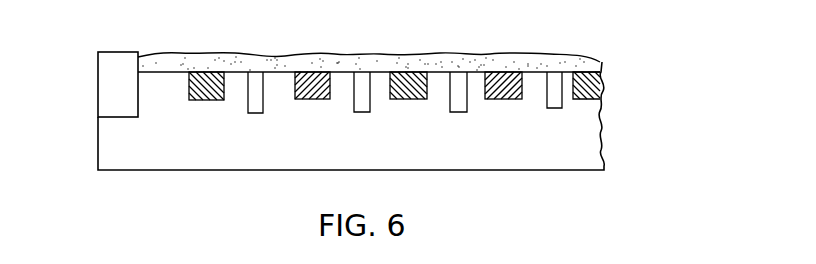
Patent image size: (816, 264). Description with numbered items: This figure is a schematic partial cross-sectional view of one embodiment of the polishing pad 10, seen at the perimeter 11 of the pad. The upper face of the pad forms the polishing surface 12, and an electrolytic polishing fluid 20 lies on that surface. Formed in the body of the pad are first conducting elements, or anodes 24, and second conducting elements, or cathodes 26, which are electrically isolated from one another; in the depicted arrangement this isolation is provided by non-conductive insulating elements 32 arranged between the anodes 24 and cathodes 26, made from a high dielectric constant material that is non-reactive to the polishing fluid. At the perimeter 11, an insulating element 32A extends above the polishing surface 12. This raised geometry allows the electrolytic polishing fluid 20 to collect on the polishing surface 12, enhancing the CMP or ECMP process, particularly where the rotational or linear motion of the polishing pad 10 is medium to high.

The polishing pad 10 is at (648, 122).
The perimeter 11 is at (98, 148).
The polishing surface 12 is at (163, 70).
The polishing fluid 20 is at (357, 55).
The first conducting elements (anodes) 24 is at (209, 72).
The second conducting elements (cathodes) 26 is at (311, 70).
The non-conductive insulating elements 32 is at (257, 114).
The insulating element 32A is at (99, 80).